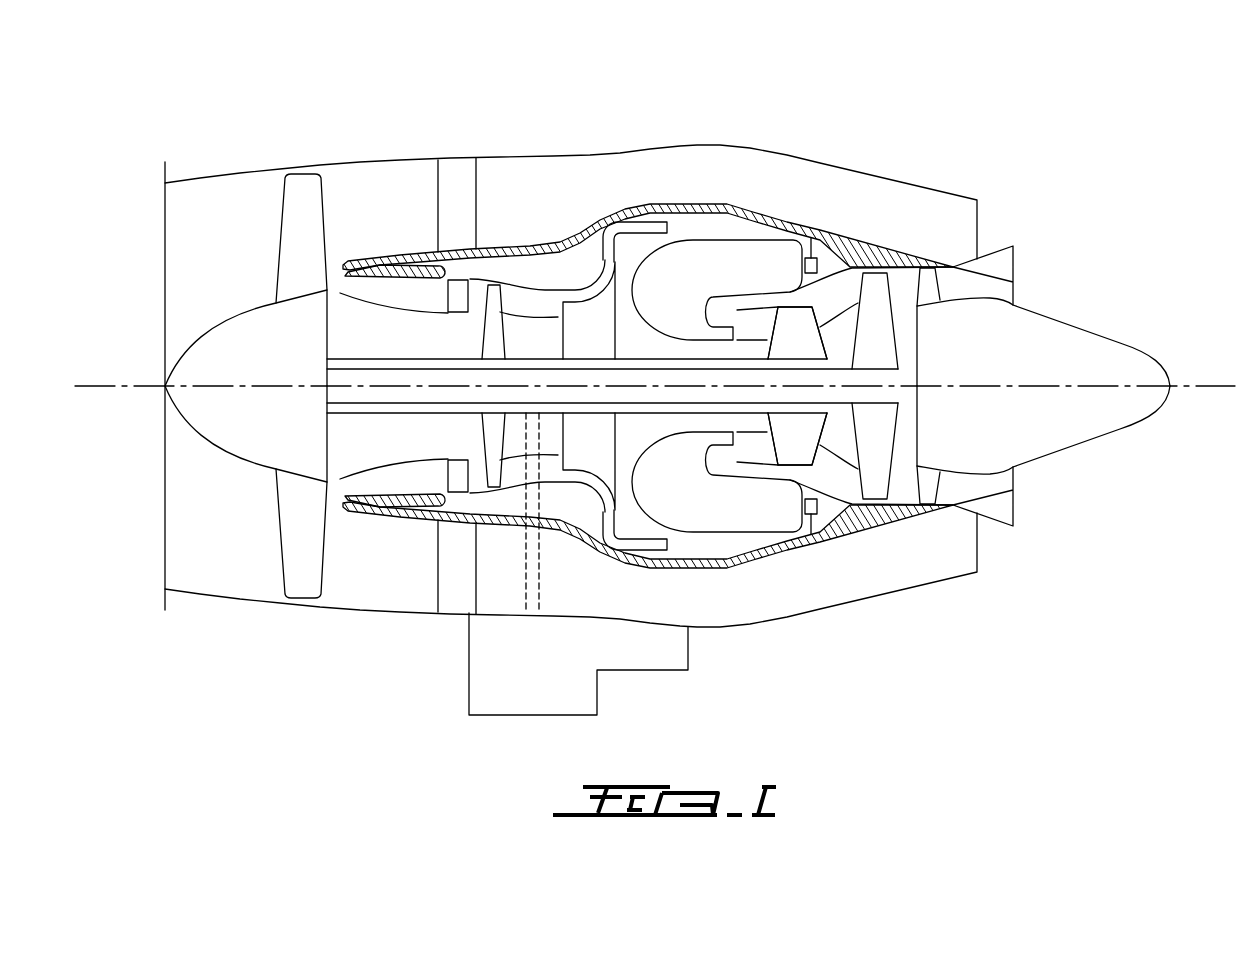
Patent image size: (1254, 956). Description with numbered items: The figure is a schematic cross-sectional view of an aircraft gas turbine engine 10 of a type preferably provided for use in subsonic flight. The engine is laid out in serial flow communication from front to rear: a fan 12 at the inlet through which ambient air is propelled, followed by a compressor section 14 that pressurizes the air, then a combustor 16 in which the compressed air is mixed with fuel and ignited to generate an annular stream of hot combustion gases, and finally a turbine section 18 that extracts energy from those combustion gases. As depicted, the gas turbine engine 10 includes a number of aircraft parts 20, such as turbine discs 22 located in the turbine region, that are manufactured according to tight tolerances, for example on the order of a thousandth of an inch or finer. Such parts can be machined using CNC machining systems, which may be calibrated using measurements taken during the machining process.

The gas turbine engine 10 is at (822, 137).
The fan 12 is at (295, 543).
The compressor section 14 is at (523, 297).
The combustor 16 is at (718, 260).
The turbine section 18 is at (838, 445).
The aircraft parts 20 is at (850, 460).
The turbine discs 22 is at (820, 447).